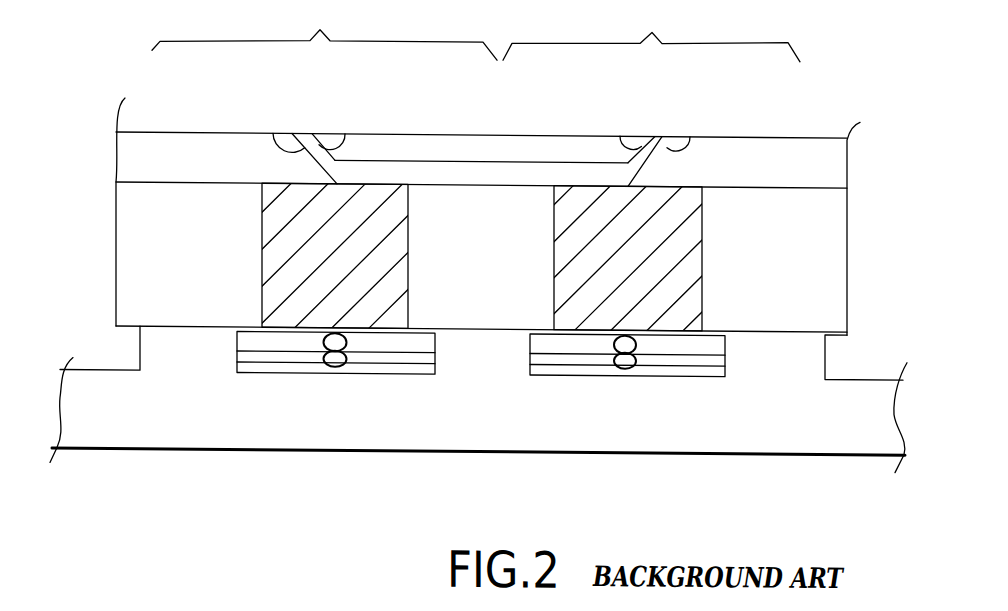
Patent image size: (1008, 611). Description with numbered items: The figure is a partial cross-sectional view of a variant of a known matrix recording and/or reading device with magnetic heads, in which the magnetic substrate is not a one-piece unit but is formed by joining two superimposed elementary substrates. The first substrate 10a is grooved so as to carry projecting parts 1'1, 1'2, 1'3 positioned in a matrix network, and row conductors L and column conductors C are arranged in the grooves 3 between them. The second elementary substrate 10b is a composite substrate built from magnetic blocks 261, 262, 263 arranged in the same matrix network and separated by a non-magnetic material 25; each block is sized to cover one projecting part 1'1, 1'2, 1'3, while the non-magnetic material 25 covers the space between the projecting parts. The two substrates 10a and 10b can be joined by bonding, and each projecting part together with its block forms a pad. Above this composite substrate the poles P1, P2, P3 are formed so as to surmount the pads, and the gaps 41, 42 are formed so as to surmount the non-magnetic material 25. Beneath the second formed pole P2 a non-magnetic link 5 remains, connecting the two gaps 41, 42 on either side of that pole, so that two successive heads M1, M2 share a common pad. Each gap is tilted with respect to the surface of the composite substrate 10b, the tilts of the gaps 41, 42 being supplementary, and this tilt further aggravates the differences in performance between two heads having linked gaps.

The second elementary substrate 10b is at (832, 273).
The first substrate 10a is at (680, 426).
The non-magnetic link 5 is at (518, 162).
The gap 41 is at (318, 140).
The gap 42 is at (655, 132).
The non-magnetic material 25 is at (273, 296).
The magnetic block 261 is at (148, 247).
The magnetic block 262 is at (437, 207).
The magnetic block 263 is at (828, 223).
The first module region M1 is at (324, 31).
The second module region M2 is at (651, 36).
The pole P1 is at (228, 151).
The pole P2 is at (512, 143).
The pole P3 is at (758, 141).
The row conductors L is at (303, 356).
The column conductors C is at (360, 340).
The grooves 3 is at (410, 373).
The projecting part 1'1 is at (188, 417).
The projecting part 1'2 is at (482, 419).
The projecting part 1'3 is at (775, 424).